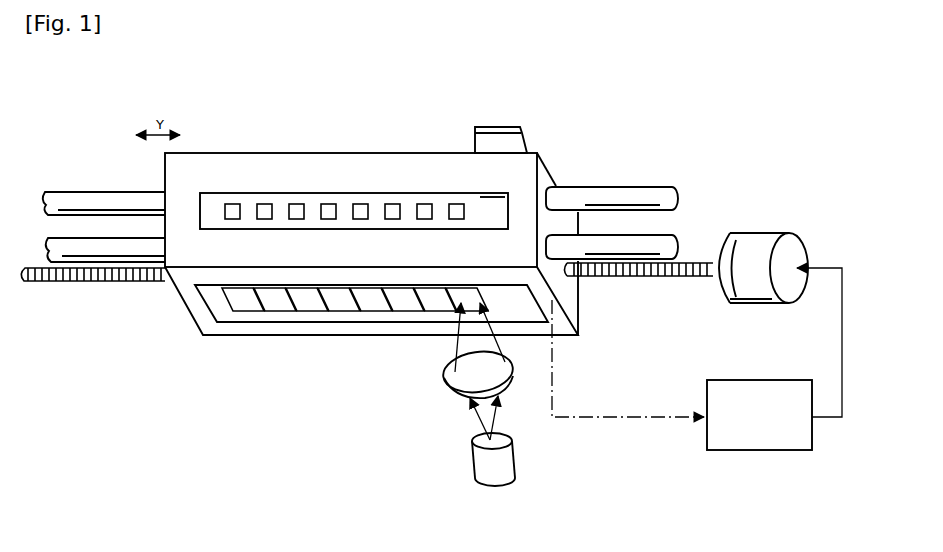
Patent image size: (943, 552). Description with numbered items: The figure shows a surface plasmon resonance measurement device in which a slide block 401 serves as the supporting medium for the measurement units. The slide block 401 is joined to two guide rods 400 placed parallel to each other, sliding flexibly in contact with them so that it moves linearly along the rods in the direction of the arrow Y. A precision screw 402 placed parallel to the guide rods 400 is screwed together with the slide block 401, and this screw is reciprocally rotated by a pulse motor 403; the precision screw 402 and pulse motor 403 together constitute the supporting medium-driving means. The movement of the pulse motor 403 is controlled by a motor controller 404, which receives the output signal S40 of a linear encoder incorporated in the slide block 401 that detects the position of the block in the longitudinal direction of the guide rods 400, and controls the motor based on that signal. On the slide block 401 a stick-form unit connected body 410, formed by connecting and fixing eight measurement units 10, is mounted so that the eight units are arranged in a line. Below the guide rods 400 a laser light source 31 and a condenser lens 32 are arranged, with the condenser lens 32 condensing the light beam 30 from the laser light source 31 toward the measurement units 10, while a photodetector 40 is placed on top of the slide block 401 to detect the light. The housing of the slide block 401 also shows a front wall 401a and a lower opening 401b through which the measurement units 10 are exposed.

The photodetector 40 is at (501, 127).
The slide block 401 is at (322, 152).
The front wall of housing 401a is at (484, 198).
The bottom opening of housing 401b is at (216, 305).
The unit connected body 410 is at (213, 194).
The guide rods 400 is at (606, 240).
The precision screw 402 is at (632, 279).
The pulse motor 403 is at (746, 304).
The motor controller 404 is at (740, 452).
The measurement unit 10 is at (433, 307).
The light beam 30 is at (473, 423).
The laser light source 31 is at (472, 463).
The condenser lens 32 is at (455, 392).
The output signal S40 is at (600, 415).